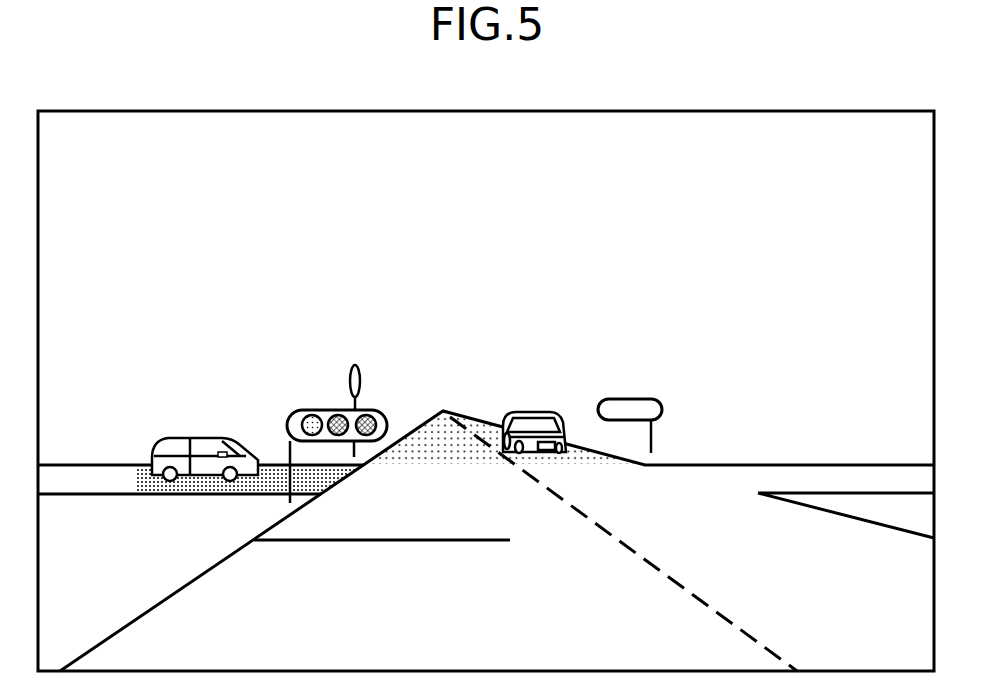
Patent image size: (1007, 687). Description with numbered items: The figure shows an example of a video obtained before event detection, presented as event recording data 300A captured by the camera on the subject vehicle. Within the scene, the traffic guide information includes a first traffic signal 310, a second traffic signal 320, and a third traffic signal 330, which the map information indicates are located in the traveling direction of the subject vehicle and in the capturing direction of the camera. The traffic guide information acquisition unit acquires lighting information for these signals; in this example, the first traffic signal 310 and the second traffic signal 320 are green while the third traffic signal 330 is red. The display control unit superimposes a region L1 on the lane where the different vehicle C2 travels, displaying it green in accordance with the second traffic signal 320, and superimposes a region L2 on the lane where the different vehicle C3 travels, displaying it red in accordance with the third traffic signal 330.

The event recording data 300A is at (795, 111).
The first traffic signal 310 is at (313, 410).
The second traffic signal 320 is at (627, 399).
The third traffic signal 330 is at (355, 366).
The different vehicle C2 is at (530, 412).
The different vehicle C3 is at (192, 439).
The region L1 is at (455, 457).
The region L2 is at (145, 489).